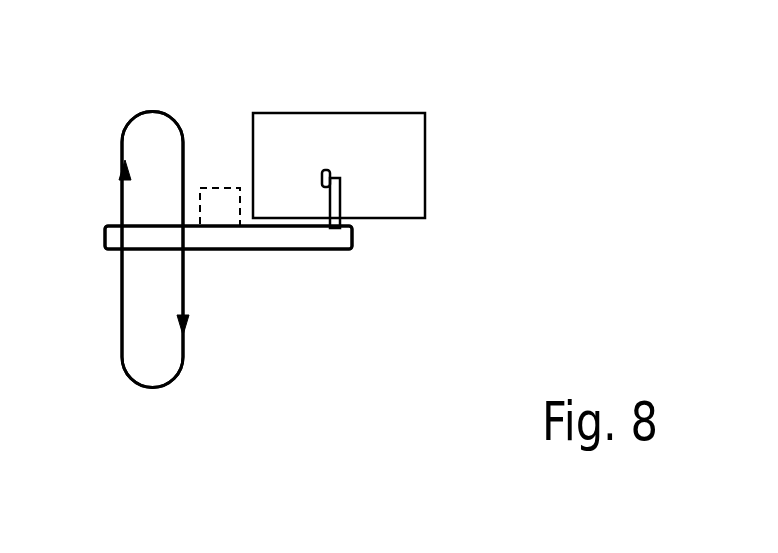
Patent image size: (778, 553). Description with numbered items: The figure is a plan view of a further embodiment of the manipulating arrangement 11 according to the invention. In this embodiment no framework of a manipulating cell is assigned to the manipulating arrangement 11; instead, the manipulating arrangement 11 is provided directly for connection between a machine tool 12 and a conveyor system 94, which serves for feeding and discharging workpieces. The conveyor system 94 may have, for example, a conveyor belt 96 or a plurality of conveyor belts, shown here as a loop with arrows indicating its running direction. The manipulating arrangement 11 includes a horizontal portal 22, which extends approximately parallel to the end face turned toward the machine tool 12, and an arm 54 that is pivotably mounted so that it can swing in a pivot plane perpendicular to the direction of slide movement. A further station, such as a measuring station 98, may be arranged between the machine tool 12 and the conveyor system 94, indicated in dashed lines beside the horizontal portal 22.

The conveyor system 94 is at (147, 80).
The conveyor belt 96 is at (125, 140).
The measuring station 98 is at (222, 198).
The machine tool 12 is at (412, 155).
The arm 54 is at (335, 205).
The horizontal portal 22 is at (207, 240).
The manipulating arrangement 11 is at (283, 278).